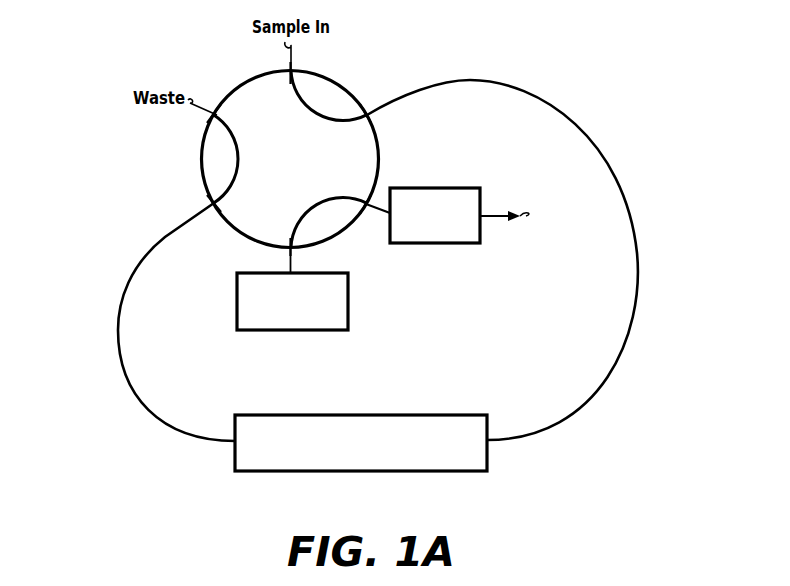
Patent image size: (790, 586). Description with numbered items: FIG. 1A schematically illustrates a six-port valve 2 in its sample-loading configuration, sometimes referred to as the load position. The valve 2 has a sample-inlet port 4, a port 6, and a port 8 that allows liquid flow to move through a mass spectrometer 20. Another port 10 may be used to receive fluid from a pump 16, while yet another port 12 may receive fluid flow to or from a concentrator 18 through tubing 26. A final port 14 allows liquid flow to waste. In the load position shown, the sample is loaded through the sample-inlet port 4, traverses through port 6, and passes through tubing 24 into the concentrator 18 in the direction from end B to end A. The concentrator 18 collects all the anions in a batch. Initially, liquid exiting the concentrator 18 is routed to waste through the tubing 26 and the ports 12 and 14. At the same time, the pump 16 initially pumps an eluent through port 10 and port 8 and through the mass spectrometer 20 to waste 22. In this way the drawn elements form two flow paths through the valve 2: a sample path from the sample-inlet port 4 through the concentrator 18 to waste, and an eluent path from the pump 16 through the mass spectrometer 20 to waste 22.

The six-port valve 2 is at (299, 173).
The sample-inlet port 4 is at (293, 72).
The port 6 is at (367, 114).
The port 8 is at (366, 205).
The port 10 is at (290, 248).
The port 12 is at (214, 203).
The port 14 is at (217, 115).
The pump 16 is at (323, 331).
The concentrator 18 is at (450, 415).
The mass spectrometer 20 is at (467, 244).
The waste 22 is at (512, 220).
The tubing 24 is at (623, 173).
The tubing 26 is at (118, 325).